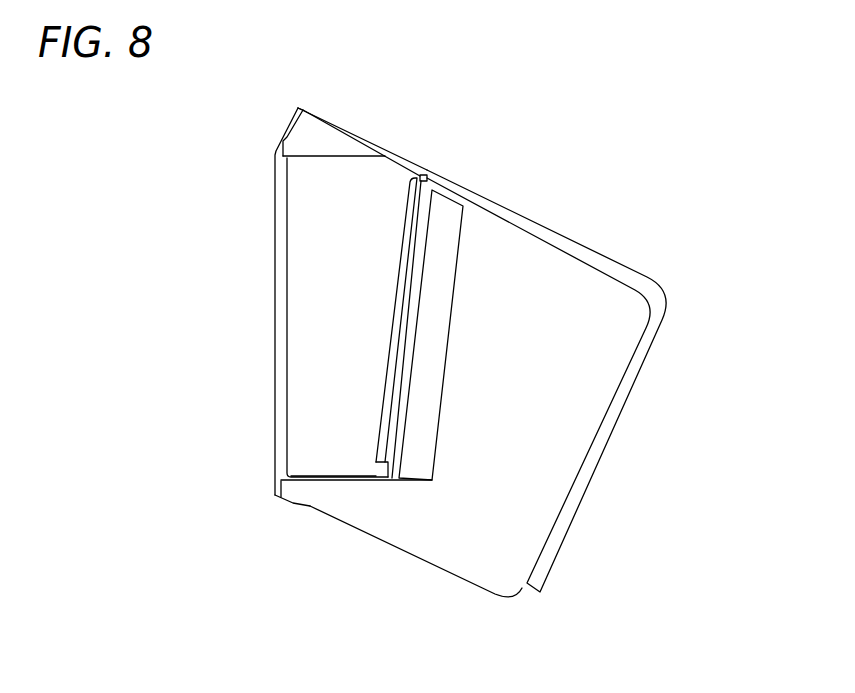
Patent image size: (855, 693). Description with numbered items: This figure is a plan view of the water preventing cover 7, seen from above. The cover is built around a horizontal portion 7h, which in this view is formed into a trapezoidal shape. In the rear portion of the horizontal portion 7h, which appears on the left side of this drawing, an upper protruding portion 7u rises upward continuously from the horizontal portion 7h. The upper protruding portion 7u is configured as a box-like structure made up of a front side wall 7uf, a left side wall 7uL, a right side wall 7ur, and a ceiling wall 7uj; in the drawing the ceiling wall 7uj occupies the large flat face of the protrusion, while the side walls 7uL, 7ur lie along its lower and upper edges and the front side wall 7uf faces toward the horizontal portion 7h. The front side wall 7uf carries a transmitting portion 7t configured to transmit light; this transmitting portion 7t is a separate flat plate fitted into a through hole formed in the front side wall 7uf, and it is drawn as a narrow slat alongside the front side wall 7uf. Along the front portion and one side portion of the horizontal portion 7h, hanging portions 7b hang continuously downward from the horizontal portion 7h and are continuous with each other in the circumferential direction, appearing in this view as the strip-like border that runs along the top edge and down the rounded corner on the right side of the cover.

The water preventing cover 7 is at (624, 141).
The hanging portion 7b is at (574, 242).
The upper protruding portion 7u is at (275, 273).
The right side wall 7ur is at (338, 153).
The ceiling wall 7uj is at (327, 323).
The front side wall 7uf is at (428, 330).
The left side wall 7uL is at (338, 481).
The transmitting portion 7t is at (418, 238).
The horizontal portion 7h is at (445, 528).